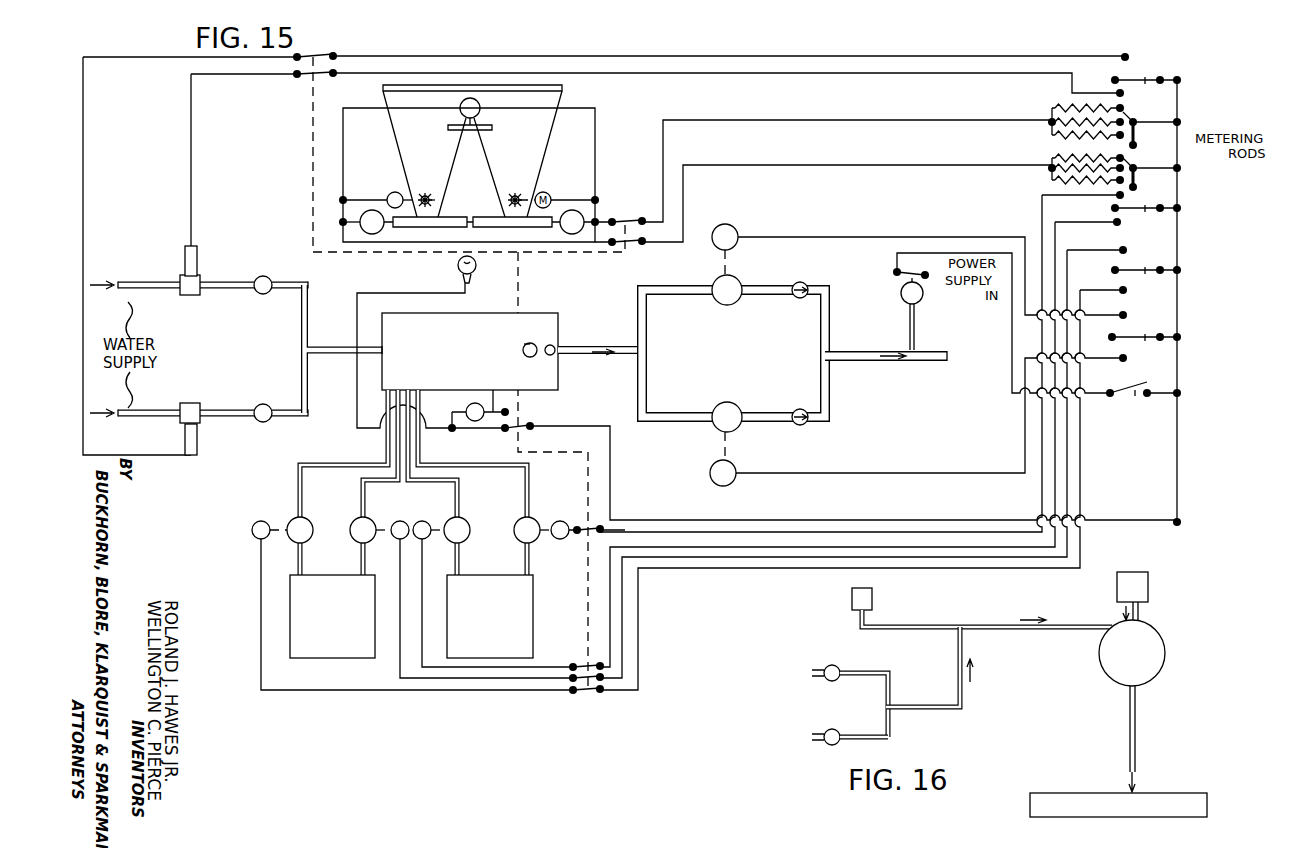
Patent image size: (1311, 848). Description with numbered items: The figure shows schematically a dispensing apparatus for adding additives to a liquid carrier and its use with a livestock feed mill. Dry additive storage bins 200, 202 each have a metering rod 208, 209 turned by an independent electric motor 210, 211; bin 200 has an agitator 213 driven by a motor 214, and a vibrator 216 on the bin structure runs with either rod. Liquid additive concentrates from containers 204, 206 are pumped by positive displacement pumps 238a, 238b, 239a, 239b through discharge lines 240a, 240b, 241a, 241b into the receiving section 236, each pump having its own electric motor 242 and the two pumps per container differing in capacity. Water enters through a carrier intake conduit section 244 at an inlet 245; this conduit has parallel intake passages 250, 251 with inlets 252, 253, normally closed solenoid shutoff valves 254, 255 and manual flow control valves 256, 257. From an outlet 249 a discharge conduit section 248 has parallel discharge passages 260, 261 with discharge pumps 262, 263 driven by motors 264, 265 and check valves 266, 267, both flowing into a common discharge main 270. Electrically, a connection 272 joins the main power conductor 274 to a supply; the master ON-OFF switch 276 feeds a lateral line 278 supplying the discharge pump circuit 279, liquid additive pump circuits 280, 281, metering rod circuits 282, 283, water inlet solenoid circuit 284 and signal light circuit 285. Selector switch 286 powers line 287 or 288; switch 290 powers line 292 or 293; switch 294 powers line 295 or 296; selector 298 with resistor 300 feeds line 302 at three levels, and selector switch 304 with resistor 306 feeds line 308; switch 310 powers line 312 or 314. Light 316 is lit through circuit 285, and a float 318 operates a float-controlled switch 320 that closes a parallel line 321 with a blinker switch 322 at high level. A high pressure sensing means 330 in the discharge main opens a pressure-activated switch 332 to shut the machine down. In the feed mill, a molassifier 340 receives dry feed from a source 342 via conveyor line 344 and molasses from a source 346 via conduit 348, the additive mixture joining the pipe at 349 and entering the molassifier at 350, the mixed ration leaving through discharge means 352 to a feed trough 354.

In FIG. 15, the dry additive storage bin 200 is at (390, 97).
In FIG. 15, the dry additive storage bin 202 is at (558, 95).
In FIG. 15, the liquid additive storage container 204 is at (348, 658).
In FIG. 15, the liquid additive storage container 206 is at (535, 634).
In FIG. 15, the metering rod 208 is at (428, 226).
In FIG. 15, the metering rod 209 is at (484, 226).
In FIG. 15, the electric motor 210 is at (386, 230).
In FIG. 15, the electric motor 211 is at (564, 229).
In FIG. 15, the dry additive agitator 213 is at (425, 190).
In FIG. 15, the electric motor 214 is at (388, 198).
In FIG. 15, the vibrator 216 is at (478, 98).
In FIG. 15, the receiving section 236 is at (470, 310).
In FIG. 15, the positive displacement pump 238a is at (306, 518).
In FIG. 15, the positive displacement pump 238b is at (374, 514).
In FIG. 15, the positive displacement pump 239a is at (460, 518).
In FIG. 15, the positive displacement pump 239b is at (532, 517).
In FIG. 15, the discharge line 240a is at (296, 506).
In FIG. 15, the discharge line 240b is at (364, 492).
In FIG. 15, the discharge line 241a is at (462, 546).
In FIG. 15, the discharge line 241b is at (530, 546).
In FIG. 15, the electric motor 242 is at (252, 528).
In FIG. 15, the carrier intake conduit section 244 is at (330, 346).
In FIG. 15, the inlet 245 is at (388, 354).
In FIG. 15, the discharge conduit section 248 is at (588, 346).
In FIG. 15, the outlet 249 is at (540, 338).
In FIG. 15, the intake passage 250 is at (220, 296).
In FIG. 15, the intake passage 251 is at (220, 414).
In FIG. 15, the inlet 252 is at (110, 282).
In FIG. 15, the inlet 253 is at (120, 424).
In FIG. 15, the solenoid actuated shutoff valve 254 is at (198, 278).
In FIG. 15, the solenoid actuated shutoff valve 255 is at (202, 424).
In FIG. 15, the flow control valve 256 is at (266, 282).
In FIG. 15, the flow control valve 257 is at (264, 424).
In FIG. 15, the discharge passage 260 is at (754, 280).
In FIG. 16, the discharge passage 260 is at (866, 672).
In FIG. 16, the discharge passage 261 is at (879, 735).
In FIG. 15, the discharge pump 262 is at (716, 278).
In FIG. 16, the discharge pump 262 is at (830, 666).
In FIG. 15, the discharge pump 263 is at (738, 428).
In FIG. 16, the discharge pump 263 is at (830, 732).
In FIG. 15, the electric motor 264 is at (735, 226).
In FIG. 15, the electric motor 265 is at (738, 478).
In FIG. 15, the check valve 266 is at (802, 304).
In FIG. 15, the check valve 267 is at (748, 410).
In FIG. 15, the discharge main 270 is at (856, 362).
In FIG. 16, the discharge main 270 is at (924, 707).
In FIG. 15, the connection 272 is at (944, 278).
In FIG. 15, the main electrical power conductor 274 is at (1012, 392).
In FIG. 15, the master ON-OFF switch 276 is at (1135, 398).
In FIG. 15, the lateral line 278 is at (1178, 384).
In FIG. 15, the discharge pump circuit 279 is at (1178, 319).
In FIG. 15, the liquid additive pump circuit 280 is at (1160, 276).
In FIG. 15, the liquid additive pump circuit 281 is at (1174, 224).
In FIG. 15, the metering rod circuit 282 is at (1178, 166).
In FIG. 15, the metering rod circuit 283 is at (1172, 118).
In FIG. 15, the water inlet solenoid circuit 284 is at (1174, 78).
In FIG. 15, the signal light circuit 285 is at (1178, 470).
In FIG. 15, the three-position selector switch 286 is at (1143, 357).
In FIG. 15, the line 287 is at (974, 237).
In FIG. 15, the line 288 is at (823, 474).
In FIG. 15, the three-position switch 290 is at (1136, 290).
In FIG. 15, the line 292 is at (1104, 250).
In FIG. 15, the line 293 is at (861, 485).
In FIG. 15, the three-position switch 294 is at (877, 442).
In FIG. 15, the line 295 is at (1044, 194).
In FIG. 15, the line 296 is at (1088, 216).
In FIG. 15, the four-position selector 298 is at (1178, 185).
In FIG. 15, the resistor 300 is at (1107, 166).
In FIG. 15, the line 302 is at (963, 165).
In FIG. 15, the four-position selector switch 304 is at (1180, 144).
In FIG. 15, the resistor 306 is at (1126, 116).
In FIG. 15, the line 308 is at (963, 120).
In FIG. 15, the three-position switch 310 is at (1141, 59).
In FIG. 15, the line 312 is at (1034, 56).
In FIG. 15, the line 314 is at (1037, 76).
In FIG. 15, the light 316 is at (458, 268).
In FIG. 15, the float 318 is at (531, 357).
In FIG. 15, the float-controlled switch 320 is at (530, 428).
In FIG. 15, the parallel line 321 is at (494, 390).
In FIG. 15, the blinker switch 322 is at (474, 396).
In FIG. 15, the high pressure sensing means 330 is at (901, 298).
In FIG. 15, the pressure-activated switch 332 is at (898, 277).
In FIG. 16, the molassifier 340 is at (1162, 648).
In FIG. 16, the source of dry premixed feed ingredients 342 is at (1148, 590).
In FIG. 16, the conveyor line 344 is at (1142, 610).
In FIG. 16, the source of molasses or other liquid feed ingredients 346 is at (873, 598).
In FIG. 16, the conduit 348 is at (1042, 628).
In FIG. 16, the connection point 349 is at (964, 633).
In FIG. 16, the injection point 350 is at (1062, 609).
In FIG. 16, the discharge means 352 is at (1140, 714).
In FIG. 16, the livestock or poultry feed trough 354 is at (1146, 790).